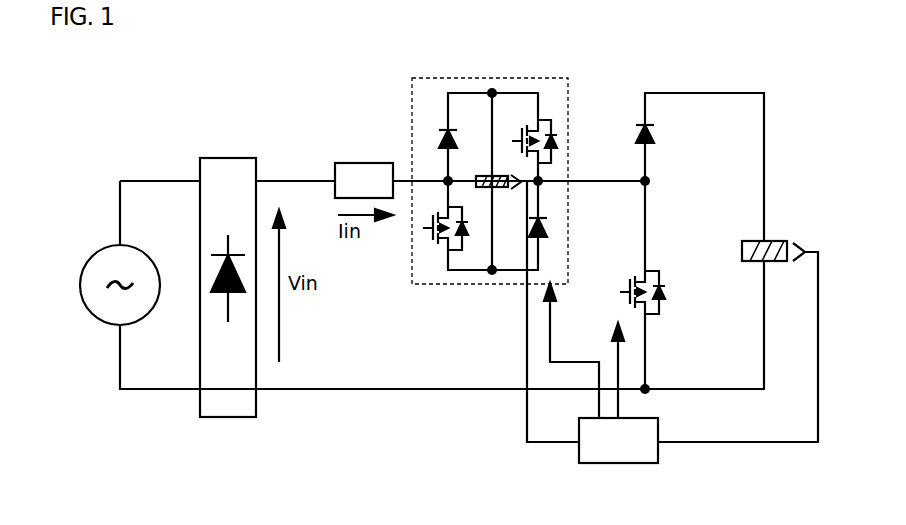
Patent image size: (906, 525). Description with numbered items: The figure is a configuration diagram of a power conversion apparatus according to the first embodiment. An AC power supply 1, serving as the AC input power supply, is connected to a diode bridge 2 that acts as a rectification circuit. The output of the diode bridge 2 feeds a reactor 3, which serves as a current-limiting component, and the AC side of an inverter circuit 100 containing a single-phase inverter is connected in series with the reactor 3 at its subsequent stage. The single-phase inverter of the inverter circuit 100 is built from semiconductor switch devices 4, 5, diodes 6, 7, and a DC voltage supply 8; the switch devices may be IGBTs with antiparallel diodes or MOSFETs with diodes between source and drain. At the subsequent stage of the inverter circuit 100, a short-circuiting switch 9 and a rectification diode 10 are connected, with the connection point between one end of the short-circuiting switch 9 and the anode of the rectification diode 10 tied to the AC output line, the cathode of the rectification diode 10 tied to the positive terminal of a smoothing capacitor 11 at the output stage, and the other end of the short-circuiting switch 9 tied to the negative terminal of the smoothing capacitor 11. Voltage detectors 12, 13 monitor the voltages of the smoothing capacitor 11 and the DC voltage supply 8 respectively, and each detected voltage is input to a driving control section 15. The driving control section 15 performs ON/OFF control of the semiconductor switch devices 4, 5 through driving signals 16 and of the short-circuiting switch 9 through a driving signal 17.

The AC power supply 1 is at (78, 292).
The diode bridge 2 is at (197, 155).
The reactor 3 is at (340, 158).
The semiconductor switch device 4 is at (438, 252).
The semiconductor switch device 5 is at (548, 110).
The diode 6 is at (437, 138).
The diode 7 is at (550, 231).
The DC voltage supply 8 is at (490, 192).
The short-circuiting switch 9 is at (623, 308).
The rectification diode 10 is at (655, 139).
The smoothing capacitor 11 is at (768, 235).
The voltage detector 12 is at (798, 268).
The voltage detector 13 is at (515, 195).
The driving control section 15 is at (658, 452).
The driving signals 16 is at (550, 337).
The driving signal 17 is at (622, 363).
The inverter circuit 100 is at (412, 78).